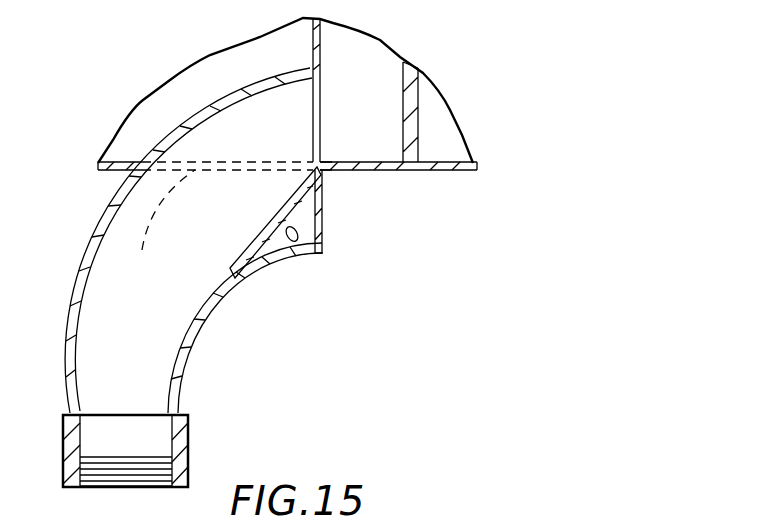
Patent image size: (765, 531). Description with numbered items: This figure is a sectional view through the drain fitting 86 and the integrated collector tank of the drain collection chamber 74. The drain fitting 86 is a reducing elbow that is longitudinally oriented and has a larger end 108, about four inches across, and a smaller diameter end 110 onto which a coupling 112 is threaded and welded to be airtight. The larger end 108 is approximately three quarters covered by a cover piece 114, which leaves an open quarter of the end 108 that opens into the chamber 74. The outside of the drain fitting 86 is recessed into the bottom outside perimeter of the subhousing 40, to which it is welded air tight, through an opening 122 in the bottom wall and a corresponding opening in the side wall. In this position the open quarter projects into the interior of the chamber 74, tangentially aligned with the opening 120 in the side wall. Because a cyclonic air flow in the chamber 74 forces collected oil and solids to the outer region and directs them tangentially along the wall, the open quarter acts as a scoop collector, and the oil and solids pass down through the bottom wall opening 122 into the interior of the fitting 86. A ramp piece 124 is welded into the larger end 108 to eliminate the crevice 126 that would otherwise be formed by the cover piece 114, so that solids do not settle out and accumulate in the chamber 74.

The subhousing 40 is at (452, 137).
The drain collection chamber 74 is at (385, 148).
The drain fitting 86 is at (86, 254).
The larger end 108 is at (321, 133).
The smaller diameter end 110 is at (137, 422).
The coupling 112 is at (188, 440).
The cover piece 114 is at (339, 240).
The opening in the side wall 120 is at (325, 173).
The opening in the bottom wall 122 is at (220, 227).
The ramp piece 124 is at (257, 238).
The crevice 126 is at (282, 246).